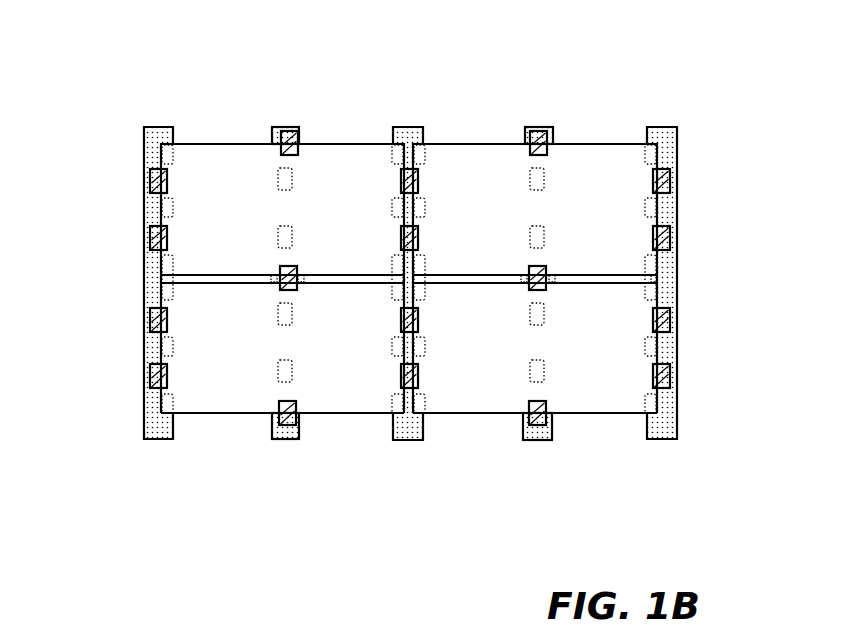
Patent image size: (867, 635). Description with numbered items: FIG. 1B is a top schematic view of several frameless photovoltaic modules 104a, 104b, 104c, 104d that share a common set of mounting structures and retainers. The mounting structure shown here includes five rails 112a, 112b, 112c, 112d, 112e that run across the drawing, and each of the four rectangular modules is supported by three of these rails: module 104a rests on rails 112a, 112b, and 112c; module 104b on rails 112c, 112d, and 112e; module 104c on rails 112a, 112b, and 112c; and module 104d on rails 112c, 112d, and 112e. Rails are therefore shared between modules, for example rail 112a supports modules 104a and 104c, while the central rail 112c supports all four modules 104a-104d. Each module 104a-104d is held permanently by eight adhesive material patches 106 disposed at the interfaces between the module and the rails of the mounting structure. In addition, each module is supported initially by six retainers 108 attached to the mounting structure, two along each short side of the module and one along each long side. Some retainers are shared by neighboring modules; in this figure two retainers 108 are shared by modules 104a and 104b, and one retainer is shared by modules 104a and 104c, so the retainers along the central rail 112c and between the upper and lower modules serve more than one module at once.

The frameless photovoltaic module 104a is at (345, 168).
The frameless photovoltaic module 104b is at (482, 158).
The frameless photovoltaic module 104c is at (347, 392).
The frameless photovoltaic module 104d is at (480, 378).
The adhesive material patch 106 is at (160, 413).
The retainer 108 is at (284, 133).
The rail 112a is at (158, 441).
The rail 112b is at (285, 441).
The rail 112c is at (408, 441).
The rail 112d is at (538, 441).
The rail 112e is at (660, 441).